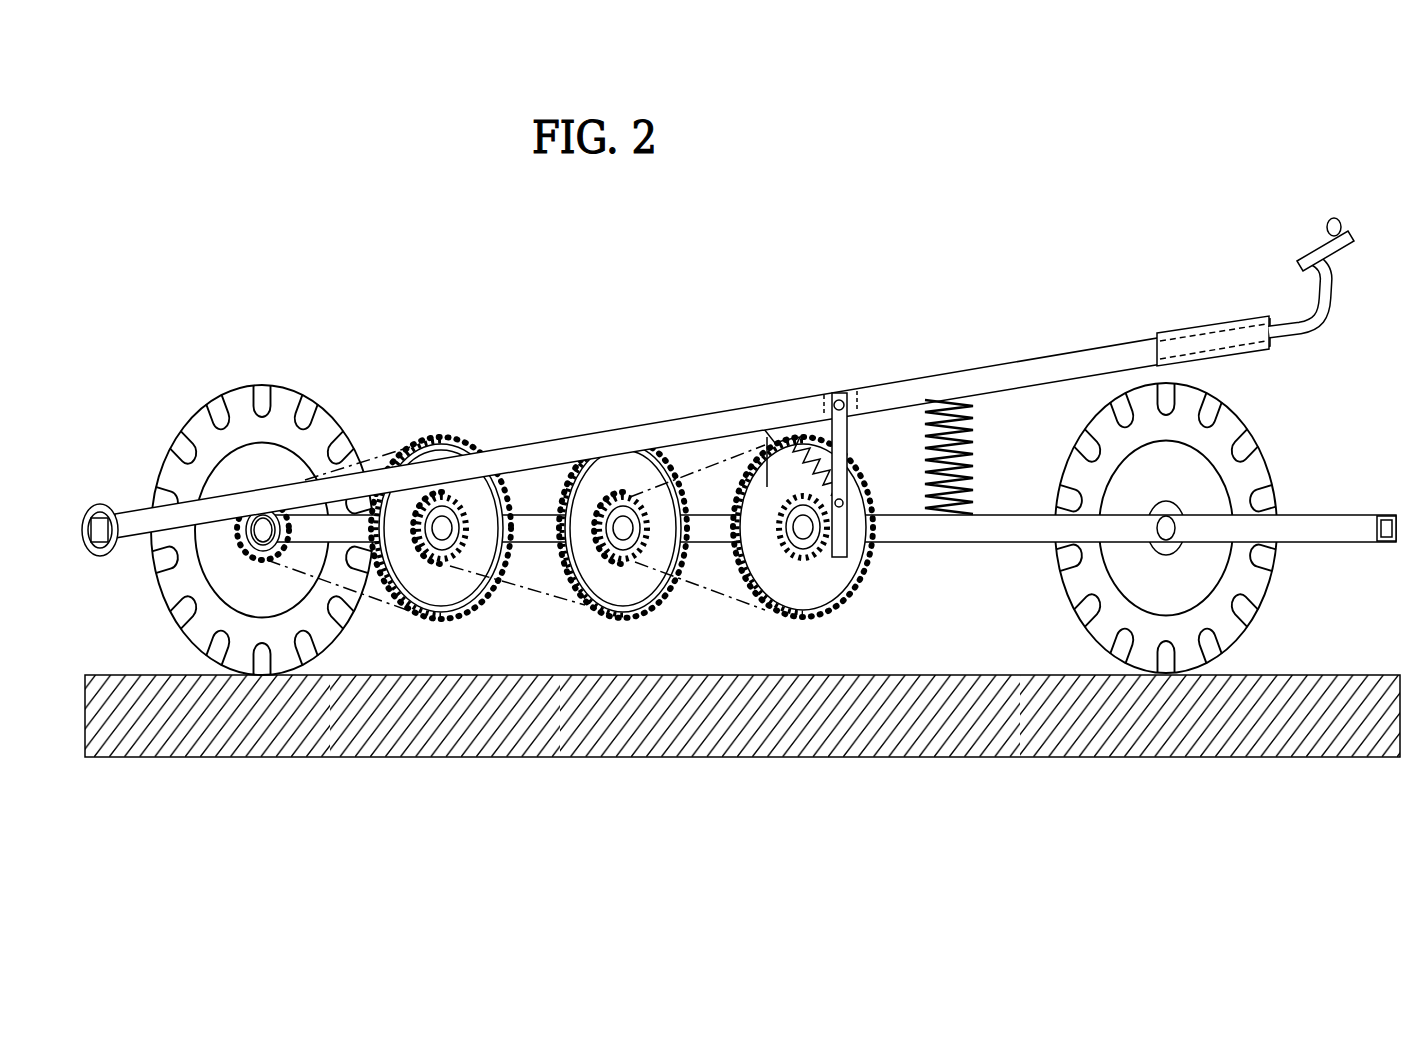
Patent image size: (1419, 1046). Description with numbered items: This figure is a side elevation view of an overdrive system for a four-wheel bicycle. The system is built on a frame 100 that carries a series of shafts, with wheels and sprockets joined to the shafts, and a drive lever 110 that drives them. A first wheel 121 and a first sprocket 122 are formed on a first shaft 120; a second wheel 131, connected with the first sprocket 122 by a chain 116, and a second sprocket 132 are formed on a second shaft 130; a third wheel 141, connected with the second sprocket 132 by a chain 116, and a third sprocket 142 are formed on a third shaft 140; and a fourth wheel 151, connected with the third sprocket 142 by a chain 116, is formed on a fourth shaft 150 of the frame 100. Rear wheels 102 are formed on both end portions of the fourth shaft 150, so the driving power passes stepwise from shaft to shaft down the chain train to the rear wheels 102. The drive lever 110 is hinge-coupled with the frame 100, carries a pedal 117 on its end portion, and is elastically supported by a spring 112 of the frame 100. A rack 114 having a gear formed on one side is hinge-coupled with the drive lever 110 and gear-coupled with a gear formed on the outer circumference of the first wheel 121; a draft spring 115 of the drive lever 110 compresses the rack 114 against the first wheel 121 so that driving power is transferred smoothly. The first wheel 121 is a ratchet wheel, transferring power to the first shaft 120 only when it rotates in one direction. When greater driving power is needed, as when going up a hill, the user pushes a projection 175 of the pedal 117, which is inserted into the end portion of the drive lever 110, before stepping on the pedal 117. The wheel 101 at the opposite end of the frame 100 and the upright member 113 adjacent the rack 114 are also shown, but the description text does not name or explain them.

The frame 100 is at (1360, 527).
The rear wheel 101 is at (1262, 470).
The rear wheels 102 is at (200, 428).
The drive lever 110 is at (1067, 353).
The spring 112 is at (950, 398).
The support bar 113 is at (840, 393).
The rack 114 is at (848, 470).
The draft spring 115 is at (768, 482).
The chain 116 is at (377, 598).
The pedal 117 is at (1310, 262).
The first shaft 120 is at (808, 548).
The first wheel 121 is at (802, 548).
The first sprocket 122 is at (757, 415).
The second shaft 130 is at (640, 497).
The second wheel 131 is at (635, 503).
The second sprocket 132 is at (610, 483).
The third shaft 140 is at (480, 500).
The third wheel 141 is at (462, 508).
The third sprocket 142 is at (412, 495).
The fourth shaft 150 is at (266, 556).
The fourth wheel 151 is at (286, 506).
The projection 175 is at (1336, 218).